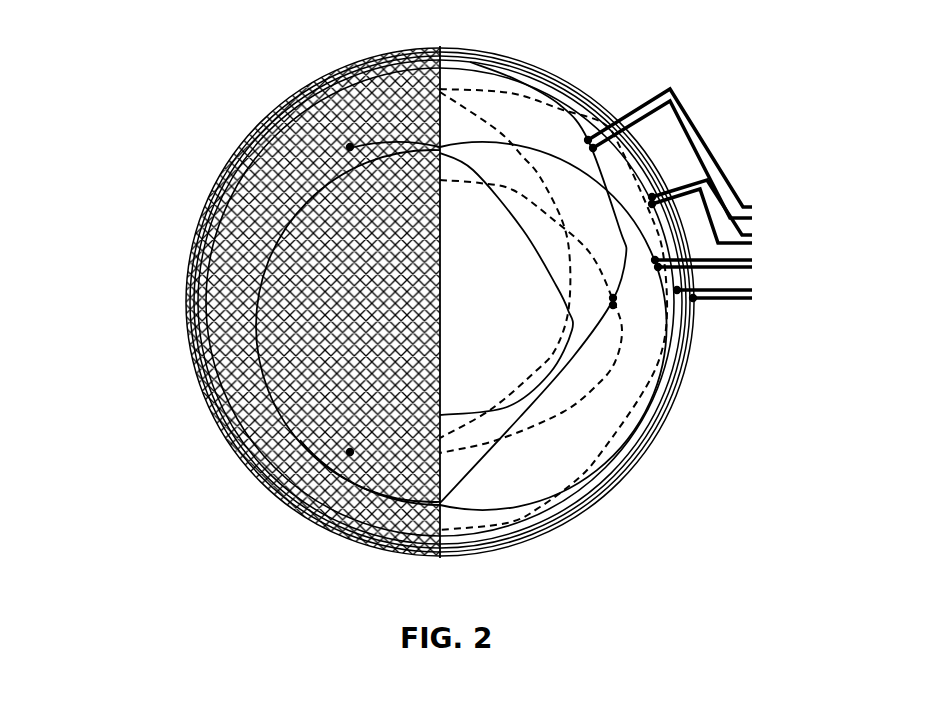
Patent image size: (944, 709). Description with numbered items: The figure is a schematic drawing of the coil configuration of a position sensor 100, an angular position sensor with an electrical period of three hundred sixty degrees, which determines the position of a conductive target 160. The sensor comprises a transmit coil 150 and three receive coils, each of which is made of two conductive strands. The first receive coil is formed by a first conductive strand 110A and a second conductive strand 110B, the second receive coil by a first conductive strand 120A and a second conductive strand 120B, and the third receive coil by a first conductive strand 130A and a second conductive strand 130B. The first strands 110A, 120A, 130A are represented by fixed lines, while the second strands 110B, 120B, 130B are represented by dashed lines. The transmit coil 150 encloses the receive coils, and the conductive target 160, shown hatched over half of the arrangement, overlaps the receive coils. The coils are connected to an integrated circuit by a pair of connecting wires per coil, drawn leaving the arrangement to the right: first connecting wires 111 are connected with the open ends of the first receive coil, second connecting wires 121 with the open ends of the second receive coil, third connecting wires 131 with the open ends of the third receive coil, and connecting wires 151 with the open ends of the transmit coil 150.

The position sensor 100 is at (742, 517).
The first conductive strand of the first receive coil 110A is at (640, 413).
The second conductive strand of the first receive coil 110B is at (473, 107).
The first connecting wires 111 is at (729, 267).
The first conductive strand of the second receive coil 120A is at (540, 70).
The second conductive strand of the second receive coil 120B is at (395, 548).
The second connecting wires 121 is at (672, 153).
The first conductive strand of the third receive coil 130A is at (503, 473).
The second conductive strand of the third receive coil 130B is at (577, 113).
The third connecting wires 131 is at (727, 217).
The transmit coil 150 is at (690, 343).
The connecting wires of the transmit coil 151 is at (740, 306).
The conductive target 160 is at (180, 320).